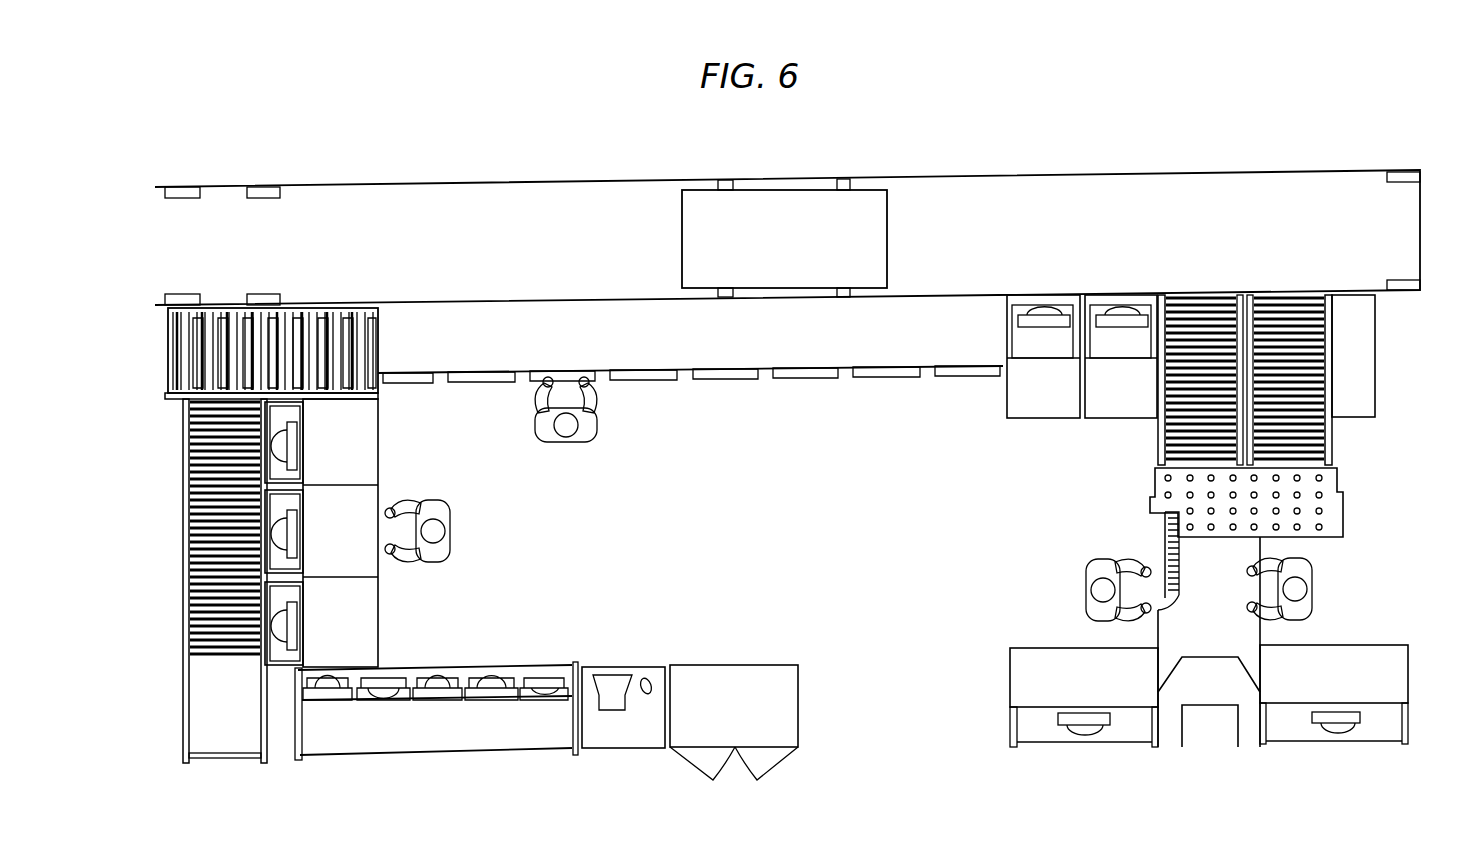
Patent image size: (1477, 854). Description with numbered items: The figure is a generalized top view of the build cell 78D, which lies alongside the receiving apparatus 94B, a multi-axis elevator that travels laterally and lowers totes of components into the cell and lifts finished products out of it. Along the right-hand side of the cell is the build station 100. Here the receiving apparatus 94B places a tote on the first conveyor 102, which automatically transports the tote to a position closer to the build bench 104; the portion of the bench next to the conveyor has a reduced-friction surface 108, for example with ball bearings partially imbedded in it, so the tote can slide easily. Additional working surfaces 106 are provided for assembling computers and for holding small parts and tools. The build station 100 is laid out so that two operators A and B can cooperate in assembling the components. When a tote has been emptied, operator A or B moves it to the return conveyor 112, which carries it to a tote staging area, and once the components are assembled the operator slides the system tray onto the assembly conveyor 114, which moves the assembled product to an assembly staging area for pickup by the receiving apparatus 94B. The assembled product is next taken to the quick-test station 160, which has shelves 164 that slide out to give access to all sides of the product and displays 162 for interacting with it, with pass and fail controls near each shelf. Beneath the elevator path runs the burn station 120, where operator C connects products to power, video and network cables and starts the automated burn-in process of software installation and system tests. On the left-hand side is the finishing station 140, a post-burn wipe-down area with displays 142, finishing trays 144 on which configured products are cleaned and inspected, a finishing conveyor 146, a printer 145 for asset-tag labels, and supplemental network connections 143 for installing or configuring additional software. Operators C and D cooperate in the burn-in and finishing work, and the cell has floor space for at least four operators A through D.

The build cell 78D is at (1077, 147).
The receiving apparatus 94B is at (776, 186).
The first conveyor 102 is at (1279, 358).
The assembly conveyor 114 is at (1329, 437).
The reduced-friction surface 108 is at (1338, 518).
The return conveyor 112 is at (1158, 560).
The build station 100 is at (1222, 629).
The build bench 104 is at (1256, 635).
The additional working surfaces 106 is at (1403, 676).
The quick-test station 160 is at (1029, 389).
The displays 162 is at (1041, 352).
The shelves 164 is at (1123, 405).
The burn station 120 is at (690, 400).
The finishing station 140 is at (531, 589).
The displays 142 is at (296, 445).
The finishing trays 144 is at (376, 626).
The printer 145 is at (608, 676).
The supplemental network connections 143 is at (646, 677).
The finishing conveyor 146 is at (183, 573).
The operator A is at (1318, 590).
The operator B is at (1087, 592).
The operator C is at (565, 449).
The operator D is at (456, 532).